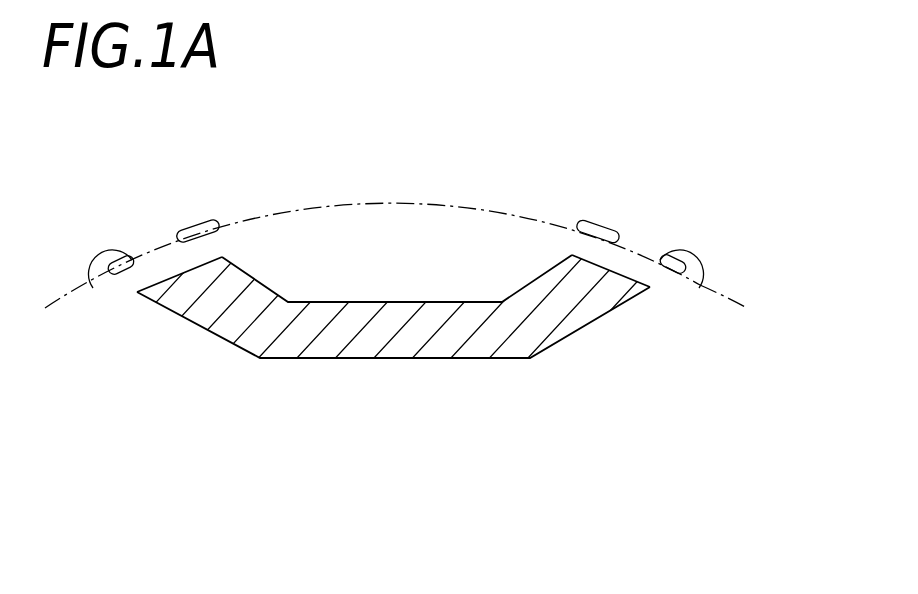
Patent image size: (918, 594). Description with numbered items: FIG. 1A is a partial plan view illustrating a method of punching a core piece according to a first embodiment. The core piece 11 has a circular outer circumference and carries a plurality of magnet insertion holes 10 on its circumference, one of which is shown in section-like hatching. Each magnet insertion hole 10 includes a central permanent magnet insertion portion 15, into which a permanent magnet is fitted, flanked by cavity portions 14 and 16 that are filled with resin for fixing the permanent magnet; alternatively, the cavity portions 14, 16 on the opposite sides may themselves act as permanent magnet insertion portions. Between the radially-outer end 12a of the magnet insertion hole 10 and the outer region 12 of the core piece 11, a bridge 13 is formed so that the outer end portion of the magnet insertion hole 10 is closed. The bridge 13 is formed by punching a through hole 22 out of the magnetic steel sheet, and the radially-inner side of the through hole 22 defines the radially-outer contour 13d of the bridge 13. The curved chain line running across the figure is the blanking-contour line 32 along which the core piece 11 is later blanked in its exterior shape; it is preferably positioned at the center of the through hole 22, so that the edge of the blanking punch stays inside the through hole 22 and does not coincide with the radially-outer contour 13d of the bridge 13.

The magnet insertion hole 10 is at (386, 381).
The core piece 11 is at (482, 202).
The outer region 12 is at (375, 177).
The radially-outer end 12a is at (160, 283).
The bridge 13 is at (180, 263).
The radially-outer contour 13d is at (93, 288).
The cavity portion 14 is at (232, 327).
The permanent magnet insertion portion 15 is at (400, 338).
The cavity portion 16 is at (545, 327).
The through hole 22 is at (138, 258).
The blanking-contour line 32 is at (713, 285).